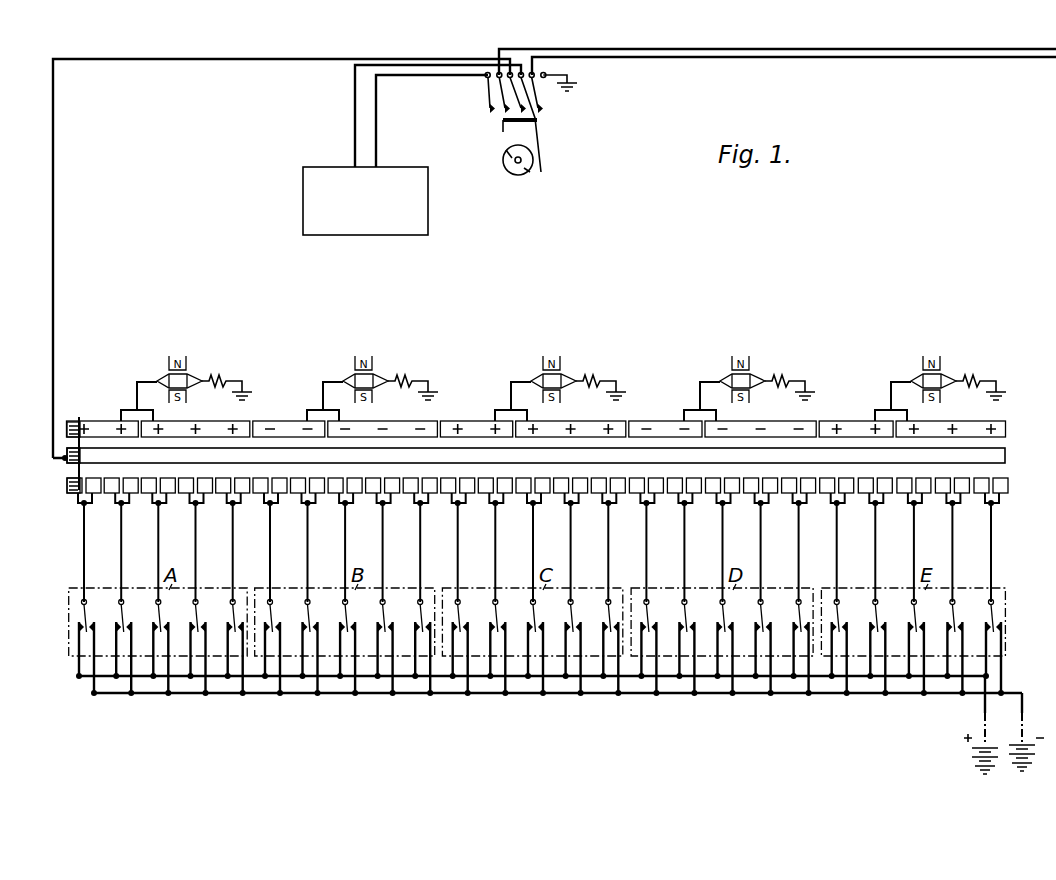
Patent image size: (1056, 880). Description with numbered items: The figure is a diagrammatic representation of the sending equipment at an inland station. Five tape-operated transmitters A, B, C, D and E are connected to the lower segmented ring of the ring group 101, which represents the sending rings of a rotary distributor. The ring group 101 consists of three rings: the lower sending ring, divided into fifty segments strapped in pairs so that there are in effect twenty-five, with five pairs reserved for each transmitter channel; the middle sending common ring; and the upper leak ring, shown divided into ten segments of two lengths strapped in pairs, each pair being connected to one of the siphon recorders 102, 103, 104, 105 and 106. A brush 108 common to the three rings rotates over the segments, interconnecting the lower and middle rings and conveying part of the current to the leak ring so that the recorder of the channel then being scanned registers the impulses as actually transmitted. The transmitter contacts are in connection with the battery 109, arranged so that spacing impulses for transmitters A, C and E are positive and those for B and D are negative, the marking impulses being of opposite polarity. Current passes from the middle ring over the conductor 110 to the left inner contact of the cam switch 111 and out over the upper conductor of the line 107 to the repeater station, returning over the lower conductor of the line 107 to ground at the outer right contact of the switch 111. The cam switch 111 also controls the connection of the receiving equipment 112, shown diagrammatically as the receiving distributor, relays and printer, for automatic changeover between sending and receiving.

The ring group 101 is at (1005, 484).
The siphon recorder 102 is at (191, 378).
The siphon recorder 103 is at (377, 378).
The siphon recorder 104 is at (565, 378).
The siphon recorder 105 is at (754, 378).
The siphon recorder 106 is at (945, 378).
The line 107 is at (1008, 45).
The brush 108 is at (80, 417).
The battery 109 is at (1013, 760).
The conductor 110 is at (55, 157).
The cam switch 111 is at (505, 153).
The receiving equipment 112 is at (303, 200).